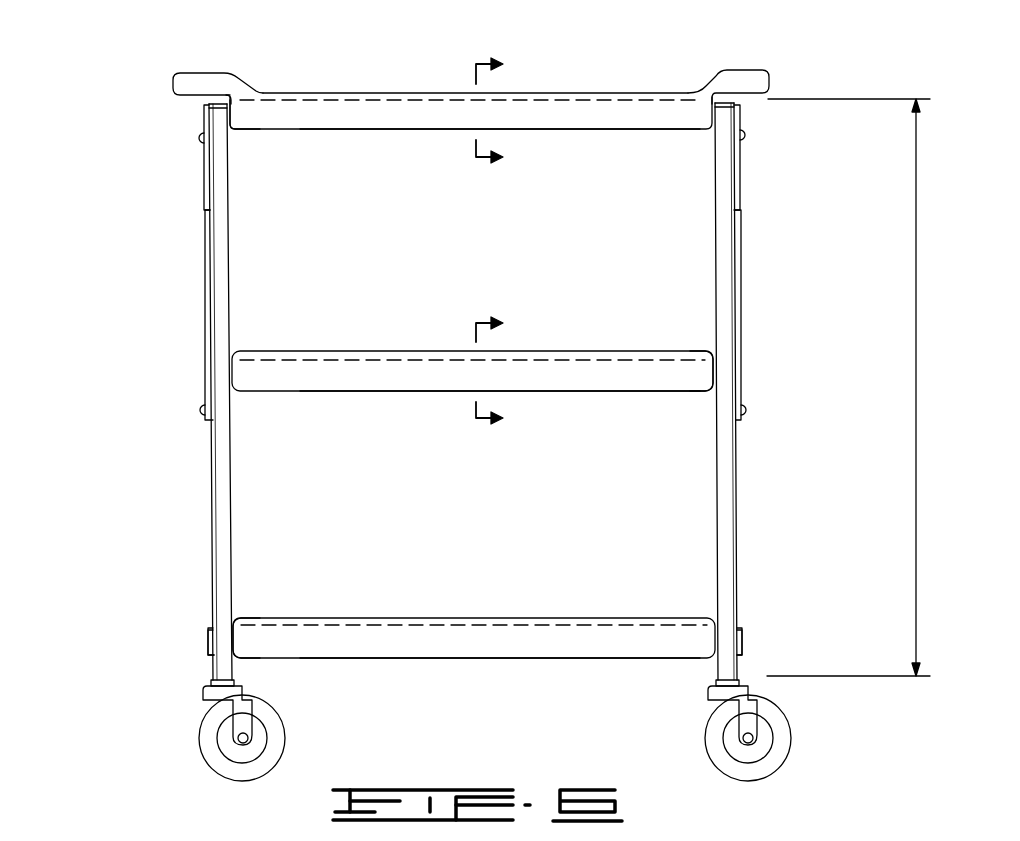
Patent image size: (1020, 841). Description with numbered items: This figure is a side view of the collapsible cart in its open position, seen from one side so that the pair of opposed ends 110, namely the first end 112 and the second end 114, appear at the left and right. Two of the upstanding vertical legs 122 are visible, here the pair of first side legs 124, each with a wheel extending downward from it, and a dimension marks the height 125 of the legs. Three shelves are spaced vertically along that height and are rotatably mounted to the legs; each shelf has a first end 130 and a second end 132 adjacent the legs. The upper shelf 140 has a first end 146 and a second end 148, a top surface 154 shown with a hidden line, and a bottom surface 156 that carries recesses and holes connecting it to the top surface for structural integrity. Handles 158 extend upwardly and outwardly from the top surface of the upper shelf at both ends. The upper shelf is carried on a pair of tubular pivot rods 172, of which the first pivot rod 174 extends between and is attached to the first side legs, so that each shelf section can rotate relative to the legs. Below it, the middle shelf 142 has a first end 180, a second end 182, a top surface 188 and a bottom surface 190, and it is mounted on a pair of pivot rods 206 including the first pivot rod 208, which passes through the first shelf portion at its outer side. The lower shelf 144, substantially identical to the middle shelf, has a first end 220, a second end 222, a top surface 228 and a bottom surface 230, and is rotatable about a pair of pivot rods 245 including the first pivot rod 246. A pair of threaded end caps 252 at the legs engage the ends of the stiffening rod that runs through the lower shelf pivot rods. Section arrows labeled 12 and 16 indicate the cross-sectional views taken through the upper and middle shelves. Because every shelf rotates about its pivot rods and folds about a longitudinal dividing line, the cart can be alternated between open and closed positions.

The section line 12- 12 is at (503, 113).
The section line 16- 16 is at (504, 372).
The opposed ends 110 is at (453, 391).
The first end 112 is at (742, 530).
The second end 114 is at (215, 540).
The legs 122 is at (453, 391).
The first side legs 124 is at (453, 391).
The height 125 is at (916, 205).
The first end 130 is at (797, 377).
The second end 132 is at (137, 392).
The upper shelf 140 is at (471, 113).
The middle shelf 142 is at (472, 361).
The lower shelf 144 is at (474, 621).
The first end 146 is at (735, 100).
The second end 148 is at (210, 100).
The top surface 154 is at (584, 97).
The bottom surface 156 is at (600, 130).
The handles 158 is at (190, 77).
The pivot rods 172 is at (298, 138).
The first pivot rod 174 is at (232, 132).
The first end 180 is at (713, 358).
The second end 182 is at (232, 392).
The top surface 188 is at (581, 350).
The bottom surface 190 is at (380, 395).
The pivot rods 206 is at (646, 398).
The first pivot rod 208 is at (713, 386).
The first end 220 is at (737, 630).
The second end 222 is at (216, 655).
The top surface 228 is at (583, 620).
The bottom surface 230 is at (400, 660).
The pivot rods 245 is at (303, 608).
The first pivot rod 246 is at (240, 618).
The threaded end caps 252 is at (210, 640).